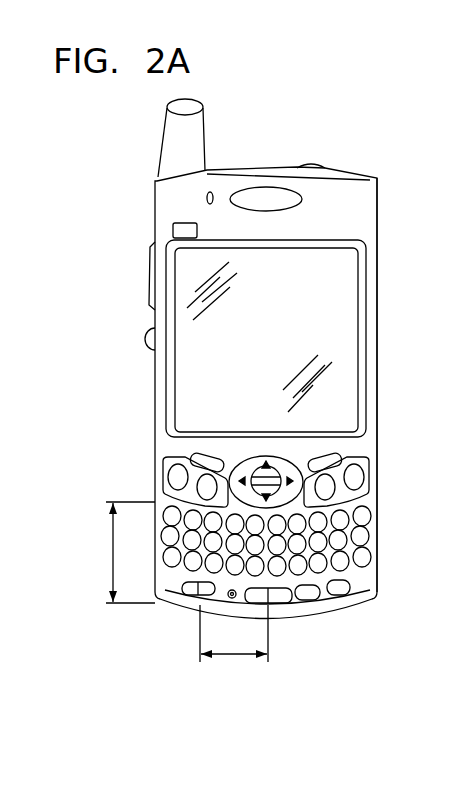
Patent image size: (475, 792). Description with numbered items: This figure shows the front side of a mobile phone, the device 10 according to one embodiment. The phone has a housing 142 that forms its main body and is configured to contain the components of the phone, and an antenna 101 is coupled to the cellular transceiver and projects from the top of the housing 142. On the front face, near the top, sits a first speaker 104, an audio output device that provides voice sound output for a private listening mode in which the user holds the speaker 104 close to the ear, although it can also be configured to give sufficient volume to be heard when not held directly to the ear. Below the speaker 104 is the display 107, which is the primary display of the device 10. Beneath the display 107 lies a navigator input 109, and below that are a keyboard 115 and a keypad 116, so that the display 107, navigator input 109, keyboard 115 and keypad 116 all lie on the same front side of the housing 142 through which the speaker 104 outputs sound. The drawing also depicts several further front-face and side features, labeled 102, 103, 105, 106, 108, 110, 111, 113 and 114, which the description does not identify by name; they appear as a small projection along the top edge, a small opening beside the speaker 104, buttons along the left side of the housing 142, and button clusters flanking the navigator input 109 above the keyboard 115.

The device 10 is at (409, 578).
The antenna 101 is at (215, 121).
The power button 102 is at (314, 159).
The indicator LED 103 is at (196, 201).
The first speaker 104 is at (313, 195).
The volume control button 105 is at (147, 273).
The side button 106 is at (142, 337).
The display 107 is at (343, 274).
The left application button 108 is at (177, 451).
The navigator input 109 is at (288, 451).
The right application button 110 is at (343, 449).
The left button cluster 111 is at (157, 471).
The function button 113 is at (349, 498).
The right button cluster 114 is at (369, 469).
The keyboard 115 is at (101, 561).
The keypad 116 is at (234, 661).
The housing 142 is at (387, 314).